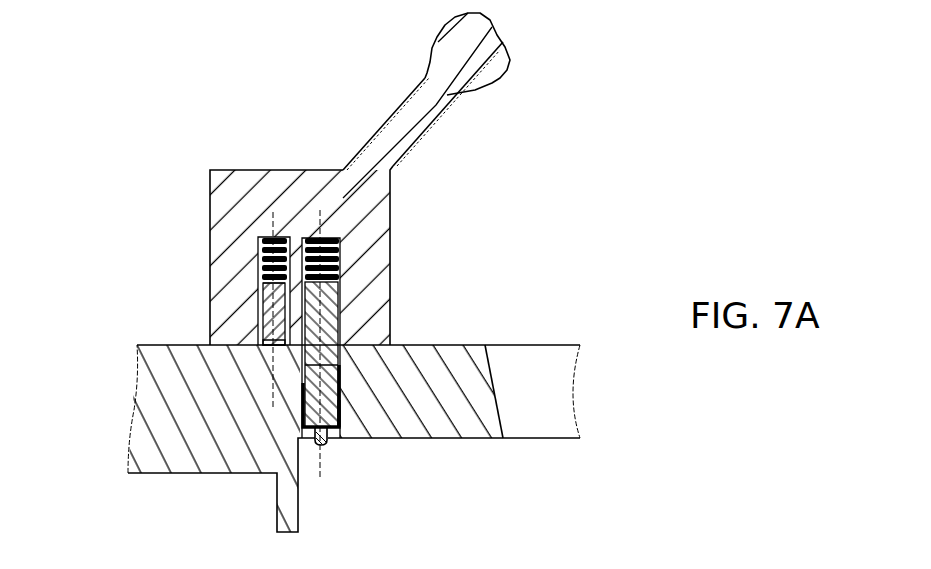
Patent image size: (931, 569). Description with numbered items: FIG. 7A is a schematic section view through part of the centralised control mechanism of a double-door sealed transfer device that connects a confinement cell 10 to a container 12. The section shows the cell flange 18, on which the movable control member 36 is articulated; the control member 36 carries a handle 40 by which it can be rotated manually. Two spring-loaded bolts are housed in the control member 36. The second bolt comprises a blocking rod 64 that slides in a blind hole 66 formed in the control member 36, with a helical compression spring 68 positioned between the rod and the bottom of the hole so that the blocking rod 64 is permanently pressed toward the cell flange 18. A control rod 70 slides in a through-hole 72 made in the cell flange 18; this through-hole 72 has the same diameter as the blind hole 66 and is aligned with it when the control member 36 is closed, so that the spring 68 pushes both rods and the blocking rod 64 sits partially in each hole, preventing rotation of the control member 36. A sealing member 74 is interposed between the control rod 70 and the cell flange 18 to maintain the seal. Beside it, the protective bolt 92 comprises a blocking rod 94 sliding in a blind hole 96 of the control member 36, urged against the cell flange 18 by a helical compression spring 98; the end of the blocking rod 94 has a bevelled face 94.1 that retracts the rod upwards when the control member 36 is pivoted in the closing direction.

The confinement cell 10 is at (387, 277).
The container 12 is at (348, 440).
The cell flange 18 is at (160, 435).
The movable control member 36 is at (276, 153).
The handle 40 is at (447, 95).
The blocking rod 64 is at (359, 292).
The blind hole 66 is at (342, 273).
The helical compression spring 68 is at (340, 238).
The control rod 70 is at (330, 430).
The through-hole 72 is at (343, 373).
The sealing member 74 is at (342, 405).
The protective bolt 92 is at (240, 222).
The blocking rod 94 is at (258, 326).
The bevelled face 94.1 is at (259, 345).
The blind hole 96 is at (258, 286).
The helical compression spring 98 is at (258, 247).